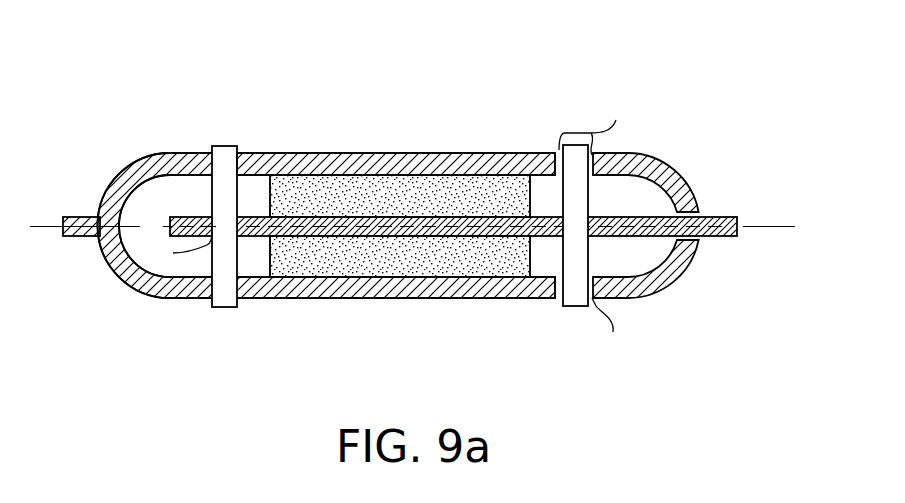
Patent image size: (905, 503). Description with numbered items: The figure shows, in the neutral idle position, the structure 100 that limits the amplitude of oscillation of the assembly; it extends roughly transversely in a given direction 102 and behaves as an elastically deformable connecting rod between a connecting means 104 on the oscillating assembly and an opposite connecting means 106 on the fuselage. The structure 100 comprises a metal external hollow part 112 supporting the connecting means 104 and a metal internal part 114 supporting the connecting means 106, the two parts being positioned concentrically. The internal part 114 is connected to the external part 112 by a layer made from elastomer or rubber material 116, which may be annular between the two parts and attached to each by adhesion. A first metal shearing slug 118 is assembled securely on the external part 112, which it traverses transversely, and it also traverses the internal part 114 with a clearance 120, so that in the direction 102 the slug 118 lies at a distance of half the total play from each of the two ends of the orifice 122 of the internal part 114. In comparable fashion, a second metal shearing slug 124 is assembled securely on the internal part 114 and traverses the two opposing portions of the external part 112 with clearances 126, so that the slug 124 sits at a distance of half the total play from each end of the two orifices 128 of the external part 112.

The structure 100 is at (414, 77).
The given direction 102 is at (762, 226).
The connecting means 104 is at (173, 153).
The opposite connecting means 106 is at (713, 215).
The external hollow part 112 is at (306, 165).
The internal part 114 is at (358, 200).
The layer made from elastomer or rubber material 116 is at (375, 275).
The first metal shearing slug 118 is at (228, 307).
The clearance 120 is at (210, 220).
The orifice 122 is at (240, 165).
The second metal shearing slug 124 is at (578, 248).
The clearance 126 is at (643, 163).
The orifices 128 is at (558, 178).